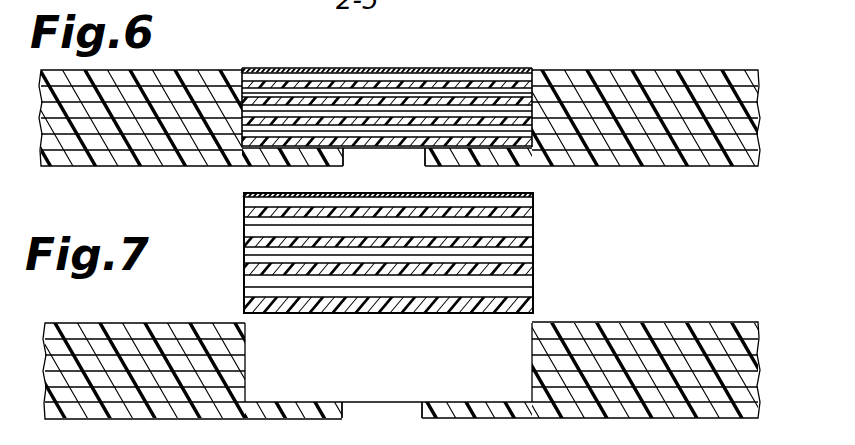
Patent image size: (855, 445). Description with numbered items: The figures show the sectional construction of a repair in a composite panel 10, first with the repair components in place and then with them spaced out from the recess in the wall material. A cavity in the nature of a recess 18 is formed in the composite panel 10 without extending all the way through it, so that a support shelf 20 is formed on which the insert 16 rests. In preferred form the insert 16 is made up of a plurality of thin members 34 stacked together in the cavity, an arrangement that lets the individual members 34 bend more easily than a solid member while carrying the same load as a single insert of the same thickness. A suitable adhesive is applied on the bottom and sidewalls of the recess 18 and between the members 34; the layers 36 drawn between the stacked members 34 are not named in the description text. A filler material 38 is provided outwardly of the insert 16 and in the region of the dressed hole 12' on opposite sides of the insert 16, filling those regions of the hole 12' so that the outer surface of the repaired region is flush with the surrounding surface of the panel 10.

In FIG. 6, the composite panel 10 is at (697, 68).
In FIG. 7, the composite panel 10 is at (717, 322).
In FIG. 6, the dressed hole 12' is at (418, 167).
In FIG. 7, the dressed hole 12' is at (385, 380).
In FIG. 6, the insert 16 is at (551, 85).
In FIG. 7, the insert 16 is at (624, 221).
In FIG. 6, the recess 18 is at (253, 88).
In FIG. 6, the support shelf 20 is at (325, 157).
In FIG. 7, the support shelf 20 is at (327, 410).
In FIG. 7, the members 34 is at (533, 213).
In FIG. 7, the insulating layers 36 is at (533, 222).
In FIG. 6, the filler material 38 is at (374, 67).
In FIG. 7, the filler material 38 is at (40, 430).